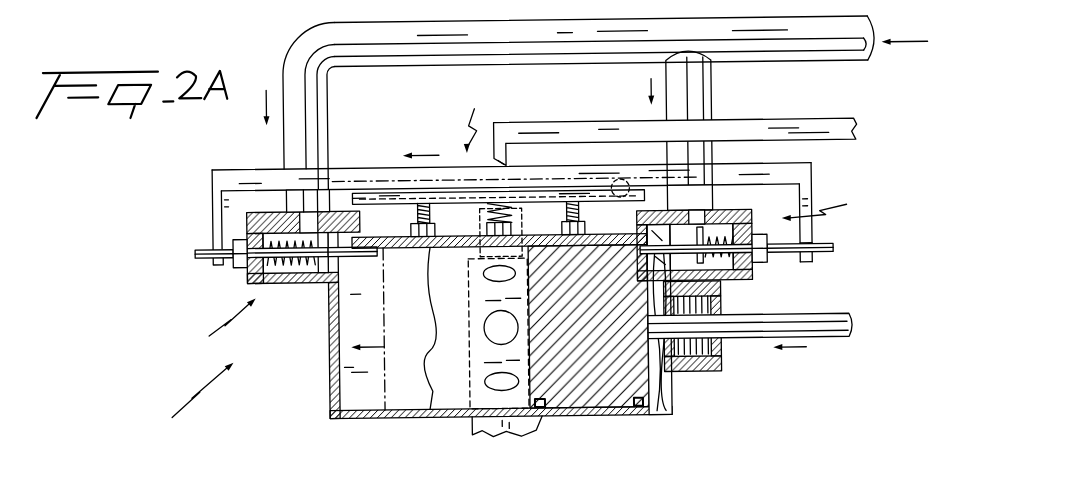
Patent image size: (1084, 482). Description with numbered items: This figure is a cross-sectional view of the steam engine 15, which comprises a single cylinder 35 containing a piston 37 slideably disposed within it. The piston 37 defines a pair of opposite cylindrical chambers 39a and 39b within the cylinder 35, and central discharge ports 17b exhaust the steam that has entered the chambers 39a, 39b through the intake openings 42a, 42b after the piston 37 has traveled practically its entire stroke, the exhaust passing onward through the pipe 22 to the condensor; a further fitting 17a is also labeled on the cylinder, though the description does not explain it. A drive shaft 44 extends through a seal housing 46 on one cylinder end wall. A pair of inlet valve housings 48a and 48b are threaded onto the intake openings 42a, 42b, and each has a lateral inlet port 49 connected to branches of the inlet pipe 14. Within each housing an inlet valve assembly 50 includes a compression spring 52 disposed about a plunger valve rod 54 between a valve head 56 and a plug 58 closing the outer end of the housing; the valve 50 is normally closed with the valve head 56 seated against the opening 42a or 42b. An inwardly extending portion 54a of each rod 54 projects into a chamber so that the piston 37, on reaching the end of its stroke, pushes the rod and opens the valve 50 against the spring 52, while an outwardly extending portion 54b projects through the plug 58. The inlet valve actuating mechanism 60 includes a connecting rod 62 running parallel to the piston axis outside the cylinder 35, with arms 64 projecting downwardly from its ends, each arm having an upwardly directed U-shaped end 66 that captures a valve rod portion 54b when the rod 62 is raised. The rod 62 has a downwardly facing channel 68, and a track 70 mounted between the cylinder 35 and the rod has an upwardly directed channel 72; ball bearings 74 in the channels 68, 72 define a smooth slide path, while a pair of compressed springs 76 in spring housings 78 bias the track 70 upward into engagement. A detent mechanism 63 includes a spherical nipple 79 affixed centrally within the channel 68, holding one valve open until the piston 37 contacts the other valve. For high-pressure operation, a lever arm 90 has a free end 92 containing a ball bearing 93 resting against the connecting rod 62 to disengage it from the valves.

The inlet pipe 14 is at (860, 30).
The engine 15 is at (192, 403).
The left fitting 17a is at (298, 212).
The central discharge ports 17b is at (699, 219).
The pipe 22 is at (493, 425).
The cylinder 35 is at (396, 417).
The piston 37 is at (606, 388).
The cylindrical chamber 39a is at (348, 376).
The cylindrical chamber 39b is at (658, 399).
The intake opening 42a is at (336, 262).
The intake opening 42b is at (682, 259).
The drive shaft 44 is at (829, 336).
The seal housing 46 is at (692, 348).
The inlet valve housing 48a is at (215, 328).
The inlet valve housing 48b is at (828, 205).
The lateral inlet port 49 is at (311, 217).
The inlet valve assembly 50 is at (266, 264).
The compression spring 52 is at (300, 262).
The plunger valve rod 54 is at (286, 259).
The inwardly extending portion 54a is at (362, 252).
The outwardly extending portion 54b is at (194, 249).
The valve head 56 is at (331, 241).
The plug 58 is at (254, 231).
The inlet valve actuating mechanism 60 is at (441, 122).
The connecting rod 62 is at (253, 165).
The detent mechanism 63 is at (468, 232).
The arms 64 is at (212, 183).
The U-shaped end 66 is at (806, 268).
The channel 68 is at (571, 190).
The track 70 is at (591, 221).
The channel 72 is at (558, 203).
The ball bearings 74 is at (371, 191).
The compressed springs 76 is at (441, 220).
The spring housings 78 is at (579, 236).
The spherical nipple 79 is at (528, 192).
The lever arm 90 is at (827, 121).
The free end 92 is at (501, 140).
The ball bearing 93 is at (516, 190).